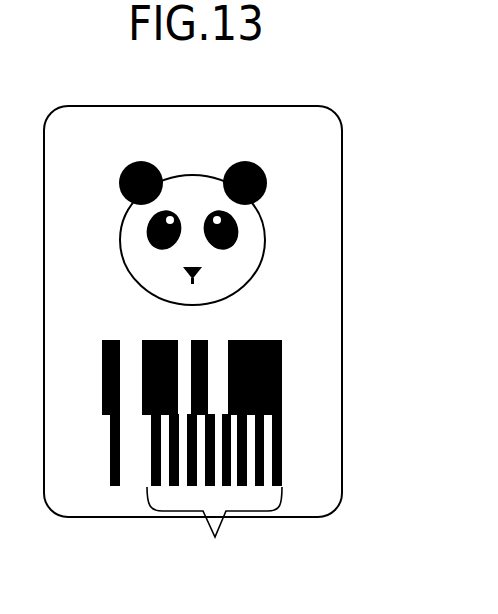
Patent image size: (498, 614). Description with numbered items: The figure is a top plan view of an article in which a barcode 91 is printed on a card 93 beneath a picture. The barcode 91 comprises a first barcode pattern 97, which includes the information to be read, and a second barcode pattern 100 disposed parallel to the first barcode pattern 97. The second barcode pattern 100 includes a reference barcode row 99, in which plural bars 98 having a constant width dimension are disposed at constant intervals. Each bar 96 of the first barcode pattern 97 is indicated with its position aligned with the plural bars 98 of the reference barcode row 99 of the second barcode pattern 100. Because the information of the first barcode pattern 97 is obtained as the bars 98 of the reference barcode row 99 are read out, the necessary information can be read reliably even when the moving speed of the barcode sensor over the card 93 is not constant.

The barcode 91 is at (322, 398).
The card 93 is at (297, 210).
The bar 96 is at (205, 340).
The first barcode pattern 97 is at (282, 373).
The bars 98 is at (282, 450).
The reference barcode row 99 is at (214, 530).
The second barcode pattern 100 is at (293, 485).